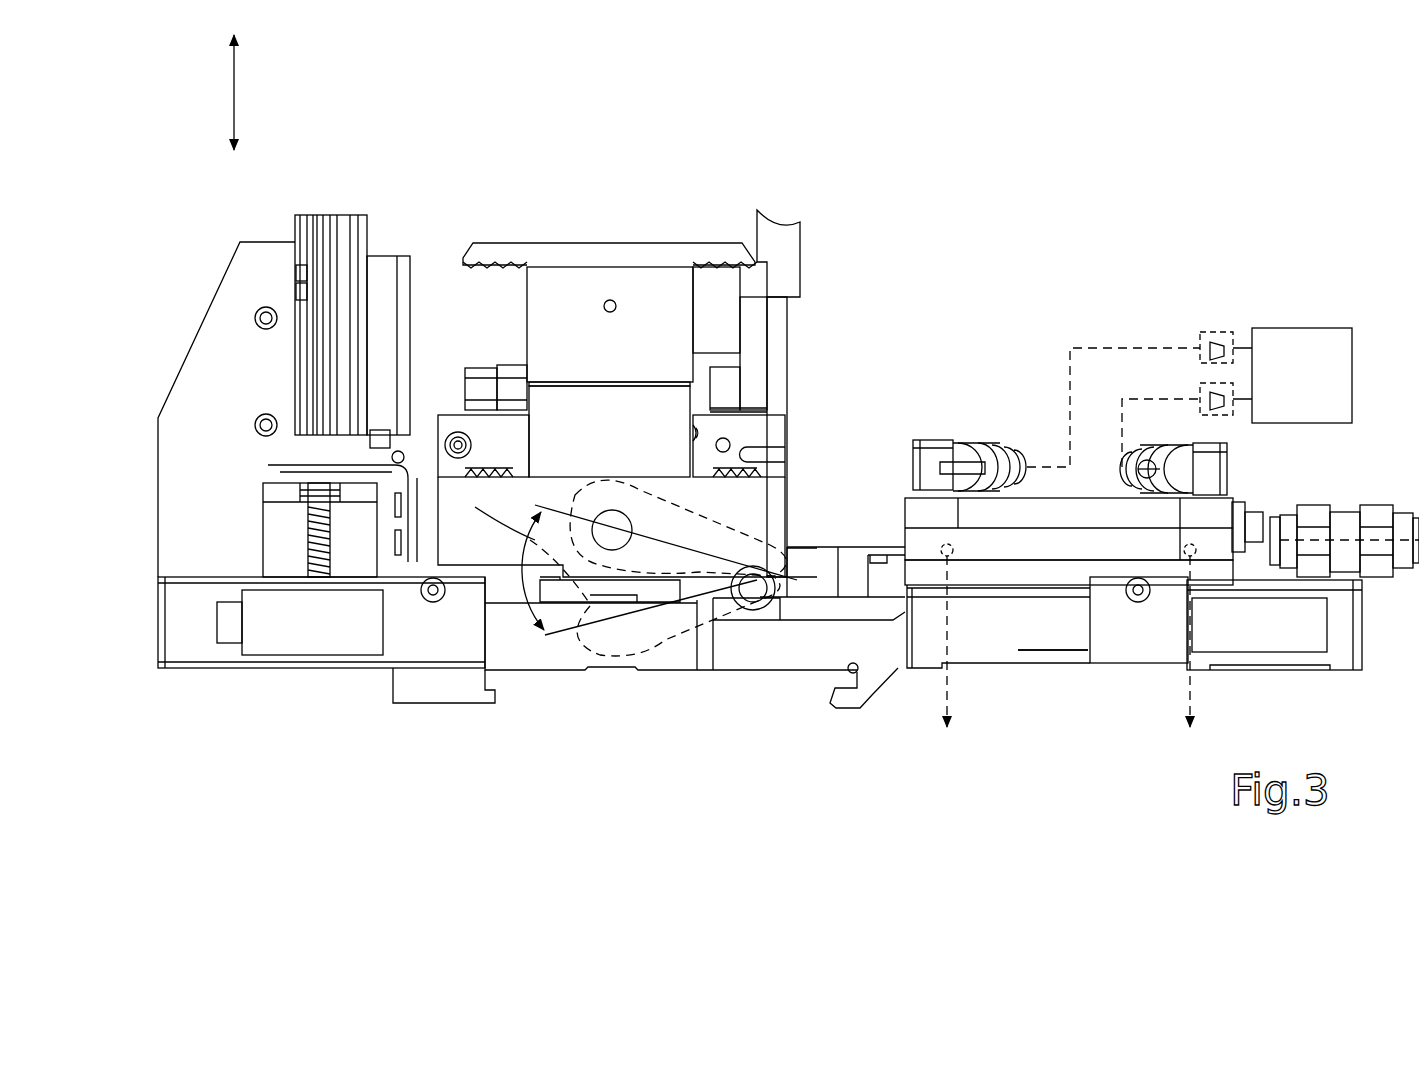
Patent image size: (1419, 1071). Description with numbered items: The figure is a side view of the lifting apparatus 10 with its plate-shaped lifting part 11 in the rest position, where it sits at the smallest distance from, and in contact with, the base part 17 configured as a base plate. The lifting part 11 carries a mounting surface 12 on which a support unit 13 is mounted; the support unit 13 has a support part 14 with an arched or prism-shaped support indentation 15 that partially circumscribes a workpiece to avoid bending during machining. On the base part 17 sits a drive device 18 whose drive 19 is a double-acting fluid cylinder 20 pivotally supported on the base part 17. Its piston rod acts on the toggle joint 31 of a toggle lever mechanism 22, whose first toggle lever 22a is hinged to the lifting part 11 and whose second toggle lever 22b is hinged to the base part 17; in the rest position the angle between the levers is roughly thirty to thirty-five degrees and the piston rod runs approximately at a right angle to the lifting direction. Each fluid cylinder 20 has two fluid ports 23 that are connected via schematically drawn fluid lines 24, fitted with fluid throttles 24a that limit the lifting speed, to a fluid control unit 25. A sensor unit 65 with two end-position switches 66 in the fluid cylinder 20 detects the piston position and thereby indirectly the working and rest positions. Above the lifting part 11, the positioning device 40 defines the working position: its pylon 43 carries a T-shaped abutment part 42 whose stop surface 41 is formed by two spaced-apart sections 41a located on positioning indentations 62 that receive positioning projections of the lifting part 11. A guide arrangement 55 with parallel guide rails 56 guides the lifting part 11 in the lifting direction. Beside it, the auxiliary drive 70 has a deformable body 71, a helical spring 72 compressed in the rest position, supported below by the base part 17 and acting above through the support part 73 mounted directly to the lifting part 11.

The lifting apparatus 10 is at (788, 426).
The lifting part 11 is at (505, 600).
The mounting surface 12 is at (565, 470).
The support unit 13 is at (802, 330).
The support part 14 is at (827, 210).
The support indentation 15 is at (775, 212).
The base part 17 is at (1000, 660).
The drive device 18 is at (1182, 347).
The drive 19 is at (1039, 564).
The fluid cylinder 20 is at (1039, 564).
The toggle lever mechanism 22 is at (659, 617).
The first toggle lever 22a is at (668, 510).
The second toggle lever 22b is at (672, 632).
The fluid port 23 is at (1150, 470).
The fluid line 24 is at (1213, 347).
The fluid throttle 24a is at (1226, 417).
The fluid control unit 25 is at (1300, 328).
The toggle joint 31 is at (775, 600).
The positioning device 40 is at (522, 222).
The stop surface 41 is at (610, 324).
The stop surface section 41a is at (497, 268).
The abutment part 42 is at (607, 230).
The pylon 43 is at (540, 415).
The guide arrangement 55 is at (355, 261).
The guide rail 56 is at (340, 220).
The positioning indentation 62 is at (728, 264).
The sensor unit 65 is at (962, 548).
The end-position switch 66 is at (1196, 554).
The auxiliary drive 70 is at (256, 488).
The deformable body 71 is at (320, 623).
The helical spring 72 is at (318, 578).
The support part 73 is at (270, 465).